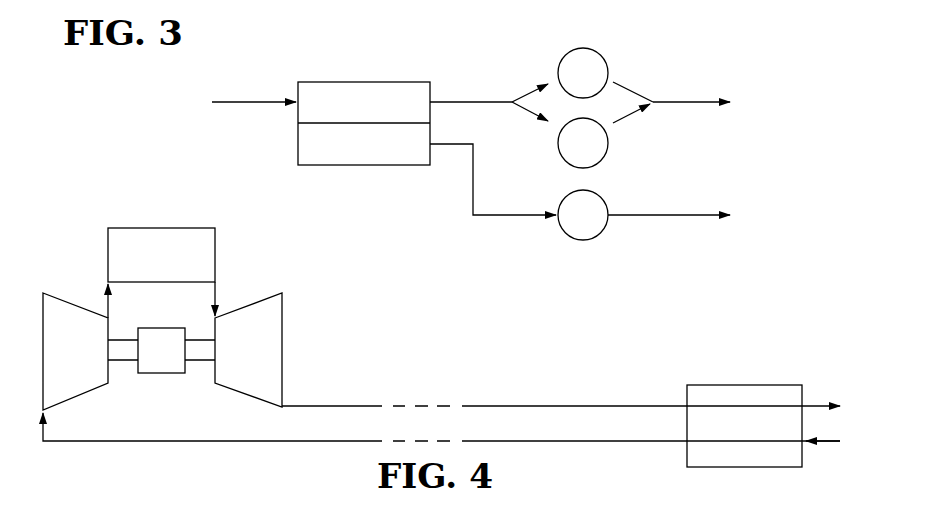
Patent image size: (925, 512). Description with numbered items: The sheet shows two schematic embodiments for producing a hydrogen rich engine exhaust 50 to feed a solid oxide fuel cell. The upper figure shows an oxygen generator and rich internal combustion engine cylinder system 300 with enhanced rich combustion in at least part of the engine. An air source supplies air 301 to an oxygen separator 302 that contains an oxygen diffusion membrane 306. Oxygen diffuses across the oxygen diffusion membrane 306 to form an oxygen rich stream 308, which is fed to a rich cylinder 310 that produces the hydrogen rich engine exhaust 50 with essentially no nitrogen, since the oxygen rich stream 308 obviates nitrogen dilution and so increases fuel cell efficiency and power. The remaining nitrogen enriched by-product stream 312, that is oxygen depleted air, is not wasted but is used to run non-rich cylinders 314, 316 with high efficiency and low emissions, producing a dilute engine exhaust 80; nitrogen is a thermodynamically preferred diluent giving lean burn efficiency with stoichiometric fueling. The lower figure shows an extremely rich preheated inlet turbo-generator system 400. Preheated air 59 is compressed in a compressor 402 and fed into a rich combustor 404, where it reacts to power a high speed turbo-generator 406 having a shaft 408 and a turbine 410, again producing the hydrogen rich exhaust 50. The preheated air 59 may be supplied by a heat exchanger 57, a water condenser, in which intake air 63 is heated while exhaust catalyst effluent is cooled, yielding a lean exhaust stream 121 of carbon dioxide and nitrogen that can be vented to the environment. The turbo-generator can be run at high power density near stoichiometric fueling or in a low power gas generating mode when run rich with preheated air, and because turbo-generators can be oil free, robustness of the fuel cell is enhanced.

In FIG. 3, the rich internal combustion engine cylinder system 300 is at (284, 40).
In FIG. 3, the air 301 is at (240, 100).
In FIG. 3, the oxygen separator 302 is at (325, 82).
In FIG. 3, the oxygen diffusion membrane 306 is at (316, 124).
In FIG. 3, the nitrogen enriched by-product stream 312 is at (465, 100).
In FIG. 3, the oxygen rich stream 308 is at (473, 180).
In FIG. 3, the non-rich cylinder 314 is at (583, 73).
In FIG. 3, the non-rich cylinder 316 is at (583, 143).
In FIG. 3, the rich cylinder 310 is at (583, 215).
In FIG. 3, the dilute engine exhaust 80 is at (686, 102).
In FIG. 3, the hydrogen rich engine exhaust 50 is at (686, 215).
In FIG. 4, the hydrogen rich engine exhaust 50 is at (331, 406).
In FIG. 4, the preheated inlet turbo-generator system 400 is at (62, 269).
In FIG. 4, the compressor 402 is at (91, 366).
In FIG. 4, the rich combustor 404 is at (181, 266).
In FIG. 4, the high speed turbo-generator 406 is at (181, 364).
In FIG. 4, the shaft 408 is at (125, 350).
In FIG. 4, the turbine 410 is at (267, 366).
In FIG. 4, the preheated air 59 is at (138, 441).
In FIG. 4, the heat exchanger 57 is at (718, 385).
In FIG. 4, the lean exhaust stream 121 is at (818, 404).
In FIG. 4, the intake air 63 is at (830, 445).